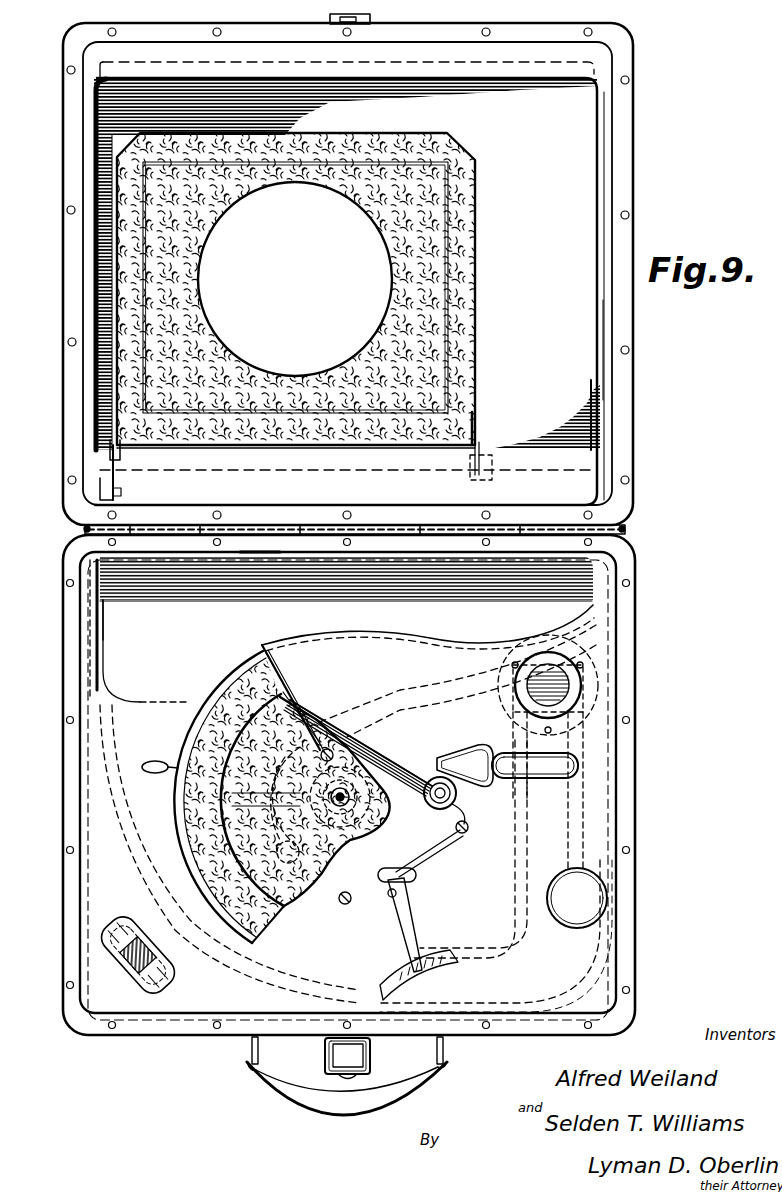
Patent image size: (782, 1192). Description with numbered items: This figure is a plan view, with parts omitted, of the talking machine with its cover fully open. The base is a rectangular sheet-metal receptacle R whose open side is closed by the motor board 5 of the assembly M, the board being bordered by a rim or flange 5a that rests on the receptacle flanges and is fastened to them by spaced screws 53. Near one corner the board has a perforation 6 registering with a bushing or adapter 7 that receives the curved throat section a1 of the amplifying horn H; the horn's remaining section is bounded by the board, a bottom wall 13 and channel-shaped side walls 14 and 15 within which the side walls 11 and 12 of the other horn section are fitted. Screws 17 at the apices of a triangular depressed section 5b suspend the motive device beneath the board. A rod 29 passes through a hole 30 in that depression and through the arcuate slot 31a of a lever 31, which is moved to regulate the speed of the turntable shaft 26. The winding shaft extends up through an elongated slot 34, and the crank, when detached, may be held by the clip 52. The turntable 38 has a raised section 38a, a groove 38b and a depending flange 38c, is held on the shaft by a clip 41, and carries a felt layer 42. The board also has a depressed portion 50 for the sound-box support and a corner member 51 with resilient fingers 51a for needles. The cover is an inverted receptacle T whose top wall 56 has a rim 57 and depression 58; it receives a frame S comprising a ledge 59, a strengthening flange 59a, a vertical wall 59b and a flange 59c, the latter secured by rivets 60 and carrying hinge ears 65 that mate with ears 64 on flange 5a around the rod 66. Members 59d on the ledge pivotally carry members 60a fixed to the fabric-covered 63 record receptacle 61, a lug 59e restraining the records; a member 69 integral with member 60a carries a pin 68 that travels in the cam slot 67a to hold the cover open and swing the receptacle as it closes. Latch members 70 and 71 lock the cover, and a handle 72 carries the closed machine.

The motor board 5 is at (98, 893).
The rim or flange 5a is at (620, 592).
The depressed central section 5b is at (410, 768).
The perforation 6 is at (570, 688).
The bushing or adapter 7 is at (592, 668).
The side wall 11 is at (562, 934).
The side wall 12 is at (514, 886).
The bottom wall 13 is at (97, 622).
The side wall 14 is at (108, 704).
The side wall 15 is at (395, 690).
The screws 17 is at (334, 754).
The turntable shaft or spindle 26 is at (346, 794).
The member or rod 29 is at (388, 868).
The hole or perforation 30 is at (418, 874).
The lever 31 is at (396, 906).
The arcuate slot 31a is at (404, 898).
The elongated slot 34 is at (575, 779).
The turntable 38 is at (180, 862).
The circular raised section 38a is at (222, 775).
The circular groove 38b is at (214, 884).
The circular flange 38c is at (224, 924).
The clip 41 is at (384, 814).
The layer of fabric or felt 42 is at (245, 706).
The depressed portion 50 is at (604, 910).
The needle receptacle member 51 is at (130, 985).
The resilient fingers 51a is at (175, 980).
The clip or resilient member 52 is at (265, 547).
The screws 53 is at (66, 719).
The top wall 56 is at (598, 184).
The peripheral rim 57 is at (612, 202).
The shallow depression 58 is at (600, 243).
The ledge or rim 59 is at (548, 466).
The strengthening flange 59a is at (602, 337).
The vertical wall 59b is at (608, 290).
The flange 59c is at (628, 372).
The spaced members 59d is at (470, 477).
The flange or lug 59e is at (345, 84).
The rivets 60 is at (626, 78).
The pivot member 60a is at (478, 432).
The record receptacle 61 is at (465, 306).
The layer of fabric 63 is at (438, 247).
The hinge ears 64 is at (348, 548).
The hinge ears 65 is at (235, 527).
The rod 66 is at (84, 529).
The cam slot 67a is at (170, 614).
The pin 68 is at (122, 493).
The member 69 is at (98, 492).
The latch member 70 is at (380, 1070).
The latch member 71 is at (370, 18).
The handle 72 is at (292, 1108).
The cover receptacle T is at (636, 138).
The frame member S is at (622, 312).
The amplifying horn H is at (103, 646).
The assembly M is at (98, 962).
The receptacle R is at (638, 888).
The curved throat section a1 is at (532, 689).